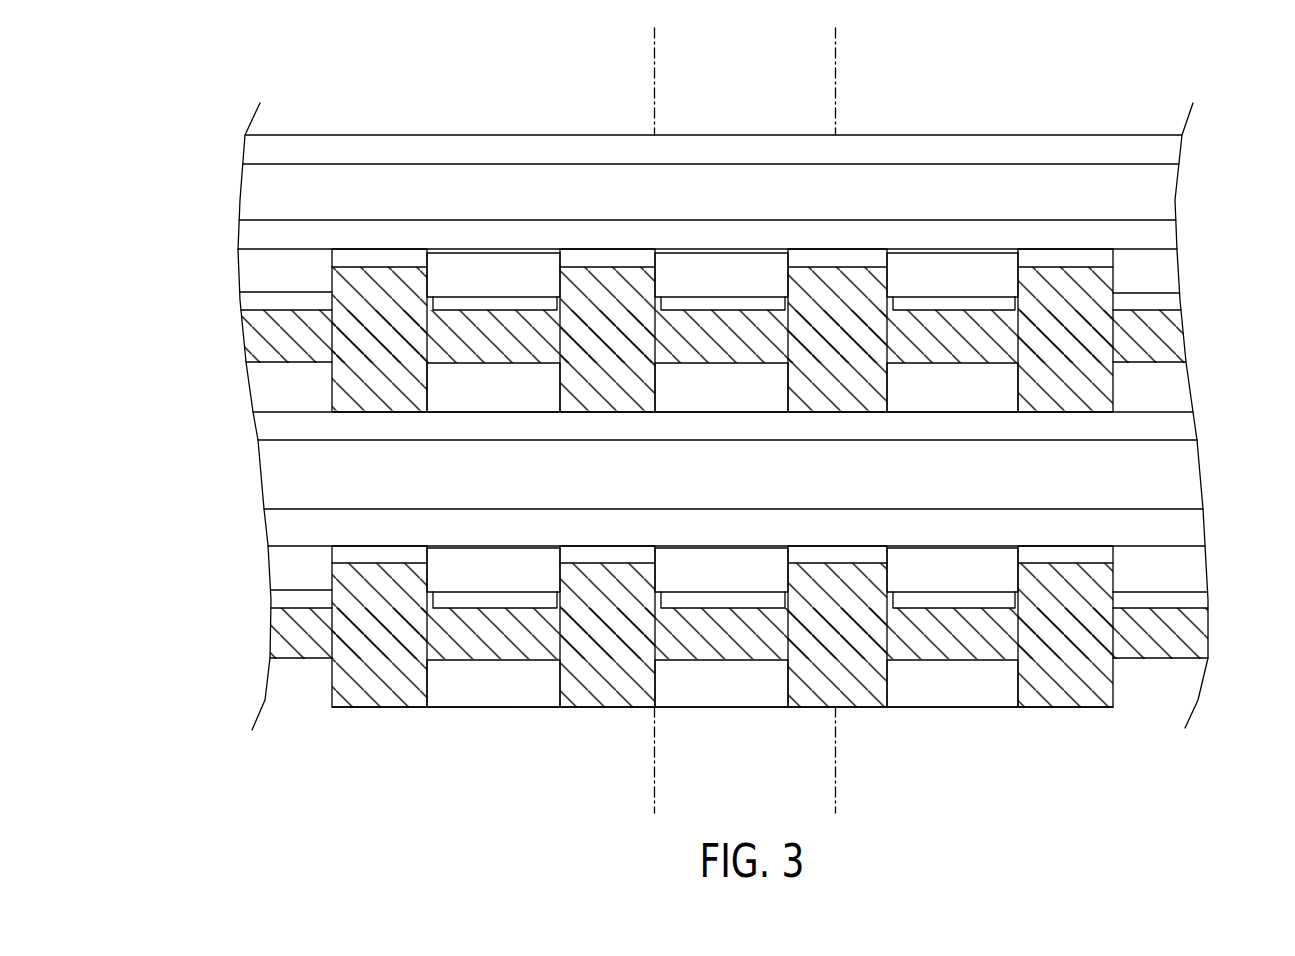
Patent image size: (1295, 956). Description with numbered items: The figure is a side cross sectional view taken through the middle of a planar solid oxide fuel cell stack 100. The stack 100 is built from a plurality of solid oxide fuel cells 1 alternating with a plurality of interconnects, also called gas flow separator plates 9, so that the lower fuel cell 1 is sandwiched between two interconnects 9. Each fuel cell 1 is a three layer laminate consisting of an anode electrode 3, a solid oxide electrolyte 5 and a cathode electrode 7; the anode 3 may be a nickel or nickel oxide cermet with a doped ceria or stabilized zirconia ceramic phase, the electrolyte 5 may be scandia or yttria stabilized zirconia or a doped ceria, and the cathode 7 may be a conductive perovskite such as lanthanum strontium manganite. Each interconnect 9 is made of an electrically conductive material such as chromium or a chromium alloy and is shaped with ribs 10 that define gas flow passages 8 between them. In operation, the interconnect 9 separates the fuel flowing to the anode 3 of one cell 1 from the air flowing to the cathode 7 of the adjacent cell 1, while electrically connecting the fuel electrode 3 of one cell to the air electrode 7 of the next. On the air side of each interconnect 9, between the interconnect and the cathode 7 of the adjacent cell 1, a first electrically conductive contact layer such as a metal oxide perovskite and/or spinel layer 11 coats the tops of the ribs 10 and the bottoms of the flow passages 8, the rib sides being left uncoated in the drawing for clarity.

The planar solid oxide fuel cell stack 100 is at (1033, 88).
The solid oxide fuel cell 1 is at (1240, 133).
The anode electrode 3 is at (257, 152).
The solid oxide electrolyte 5 is at (257, 199).
The cathode electrode 7 is at (257, 246).
The gas flow passages 8 is at (498, 282).
The interconnect/gas flow separator plate 9 is at (1240, 283).
The ribs 10 is at (318, 283).
The metal oxide perovskite and/or spinel layer 11 is at (1114, 263).